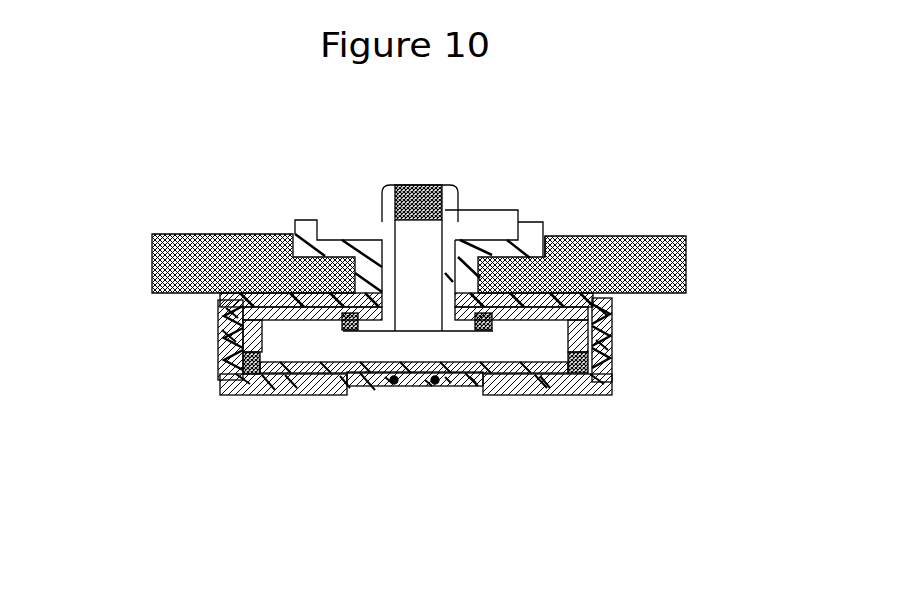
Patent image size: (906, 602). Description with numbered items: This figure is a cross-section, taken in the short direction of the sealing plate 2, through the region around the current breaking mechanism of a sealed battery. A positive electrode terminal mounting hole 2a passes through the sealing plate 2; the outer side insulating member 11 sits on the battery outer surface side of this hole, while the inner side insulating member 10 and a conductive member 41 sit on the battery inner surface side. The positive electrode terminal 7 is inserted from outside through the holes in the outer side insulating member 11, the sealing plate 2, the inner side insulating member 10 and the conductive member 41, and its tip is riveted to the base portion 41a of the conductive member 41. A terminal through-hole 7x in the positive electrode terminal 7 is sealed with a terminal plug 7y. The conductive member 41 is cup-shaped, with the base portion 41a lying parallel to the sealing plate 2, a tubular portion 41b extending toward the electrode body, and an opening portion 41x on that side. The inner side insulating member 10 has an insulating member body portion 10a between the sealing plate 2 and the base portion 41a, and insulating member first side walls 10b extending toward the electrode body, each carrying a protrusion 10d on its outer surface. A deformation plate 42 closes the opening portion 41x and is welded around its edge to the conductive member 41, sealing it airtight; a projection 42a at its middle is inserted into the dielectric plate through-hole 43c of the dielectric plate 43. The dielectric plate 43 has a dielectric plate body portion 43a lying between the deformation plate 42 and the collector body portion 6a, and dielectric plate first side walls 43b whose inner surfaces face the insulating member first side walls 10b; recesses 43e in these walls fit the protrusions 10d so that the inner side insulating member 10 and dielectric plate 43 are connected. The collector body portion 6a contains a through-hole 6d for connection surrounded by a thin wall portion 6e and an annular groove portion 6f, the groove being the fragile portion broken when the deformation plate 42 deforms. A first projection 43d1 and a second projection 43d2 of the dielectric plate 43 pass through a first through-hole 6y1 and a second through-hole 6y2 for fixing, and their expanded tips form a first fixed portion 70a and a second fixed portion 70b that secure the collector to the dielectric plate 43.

The sealing plate 2 is at (668, 238).
The positive electrode terminal mounting hole 2a is at (332, 213).
The collector body portion 6a is at (600, 397).
The through-hole for connection 6d is at (395, 387).
The thin wall portion 6e is at (472, 397).
The annular groove portion 6f is at (450, 397).
The first through-hole for fixing 6y1 is at (345, 397).
The second through-hole for fixing 6y2 is at (545, 397).
The positive electrode terminal 7 is at (460, 222).
The terminal through-hole 7x is at (407, 253).
The terminal plug 7y is at (408, 195).
The inner side insulating member 10 is at (250, 262).
The insulating member body portion 10a is at (318, 232).
The insulating member first side wall 10b is at (225, 300).
The protrusion 10d is at (228, 316).
The outer side insulating member 11 is at (540, 232).
The conductive member 41 is at (605, 305).
The base portion 41a is at (553, 300).
The tubular portion 41b is at (243, 360).
The opening portion 41x is at (395, 405).
The deformation plate 42 is at (265, 392).
The projection 42a is at (430, 400).
The dielectric plate 43 is at (612, 383).
The dielectric plate body portion 43a is at (365, 395).
The dielectric plate first side wall 43b is at (245, 376).
The dielectric plate through-hole 43c is at (470, 395).
The first projection 43d1 is at (290, 400).
The second projection 43d2 is at (540, 400).
The recess 43e is at (222, 342).
The first fixed portion 70a is at (310, 397).
The second fixed portion 70b is at (520, 397).